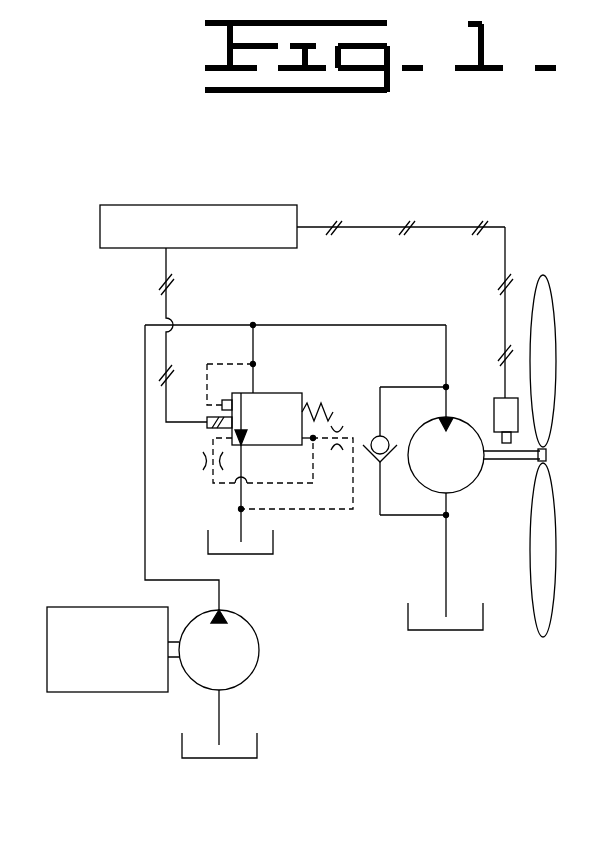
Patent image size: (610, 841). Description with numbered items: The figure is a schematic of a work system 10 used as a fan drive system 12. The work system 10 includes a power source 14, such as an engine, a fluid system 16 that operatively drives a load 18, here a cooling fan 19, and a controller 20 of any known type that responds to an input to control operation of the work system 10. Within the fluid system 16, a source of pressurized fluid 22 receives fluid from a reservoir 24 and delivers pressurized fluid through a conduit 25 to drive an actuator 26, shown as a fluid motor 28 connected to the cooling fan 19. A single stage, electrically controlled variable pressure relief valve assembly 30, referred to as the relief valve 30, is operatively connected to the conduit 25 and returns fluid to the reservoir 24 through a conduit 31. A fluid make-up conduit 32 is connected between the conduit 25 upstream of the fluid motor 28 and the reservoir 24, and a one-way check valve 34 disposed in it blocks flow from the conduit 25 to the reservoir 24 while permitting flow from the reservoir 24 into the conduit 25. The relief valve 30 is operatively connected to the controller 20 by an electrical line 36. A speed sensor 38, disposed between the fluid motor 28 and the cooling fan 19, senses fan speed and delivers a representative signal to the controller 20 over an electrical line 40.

The work system 10 is at (360, 213).
The fan drive system 12 is at (463, 323).
The power source 14 is at (78, 692).
The fluid system 16 is at (388, 694).
The load 18 is at (562, 491).
The cooling fan 19 is at (545, 290).
The controller 20 is at (218, 205).
The source of pressurized fluid 22 is at (207, 662).
The reservoir 24 is at (273, 540).
The conduit 25 is at (145, 352).
The actuator 26 is at (474, 500).
The fluid motor 28 is at (478, 500).
The variable pressure relief valve assembly 30 is at (267, 372).
The conduit 31 is at (237, 495).
The fluid make-up conduit 32 is at (423, 386).
The one-way check valve 34 is at (378, 436).
The electrical line 36 is at (166, 260).
The speed sensor 38 is at (494, 412).
The electrical line 40 is at (505, 302).